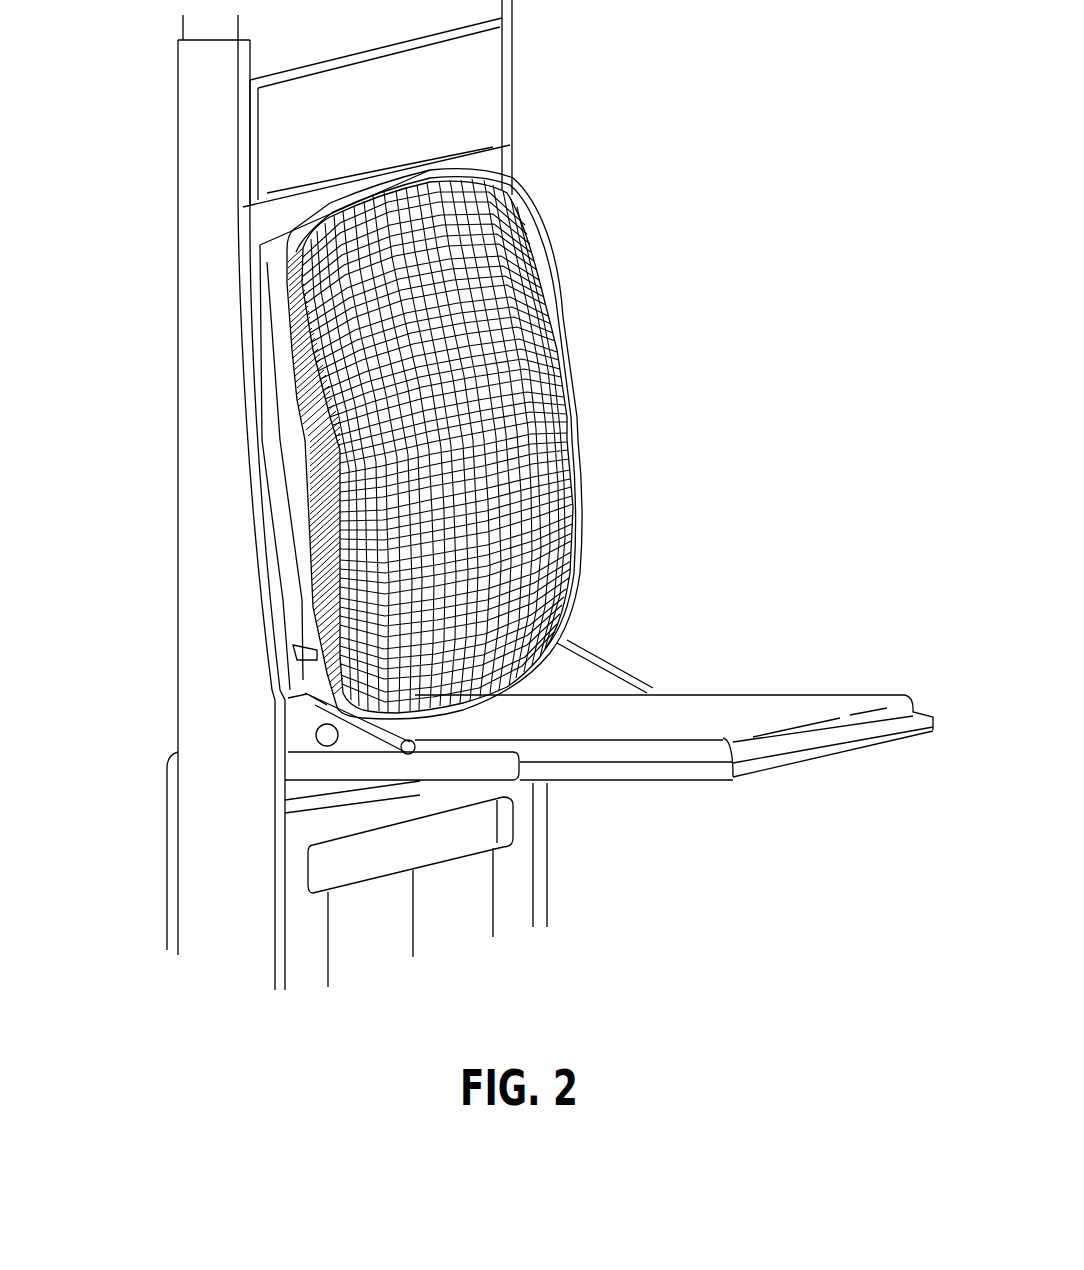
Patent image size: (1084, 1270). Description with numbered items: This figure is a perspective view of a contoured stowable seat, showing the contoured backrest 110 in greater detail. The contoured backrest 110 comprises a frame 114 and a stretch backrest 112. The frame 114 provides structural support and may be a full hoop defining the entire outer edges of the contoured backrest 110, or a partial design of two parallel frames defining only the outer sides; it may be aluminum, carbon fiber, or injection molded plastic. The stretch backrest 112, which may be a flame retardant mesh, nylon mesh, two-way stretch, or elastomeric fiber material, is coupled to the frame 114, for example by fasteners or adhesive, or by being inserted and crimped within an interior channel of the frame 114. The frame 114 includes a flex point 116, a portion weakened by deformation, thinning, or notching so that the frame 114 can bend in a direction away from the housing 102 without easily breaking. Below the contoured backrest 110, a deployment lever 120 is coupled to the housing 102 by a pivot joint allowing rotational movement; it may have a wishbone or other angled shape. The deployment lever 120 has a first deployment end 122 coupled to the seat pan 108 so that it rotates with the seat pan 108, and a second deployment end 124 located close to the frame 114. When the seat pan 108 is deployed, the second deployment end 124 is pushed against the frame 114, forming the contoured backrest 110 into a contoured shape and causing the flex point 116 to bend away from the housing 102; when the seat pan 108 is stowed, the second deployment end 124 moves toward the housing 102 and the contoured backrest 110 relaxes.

The housing 102 is at (207, 592).
The seat pan 108 is at (782, 707).
The contoured backrest 110 is at (419, 434).
The stretch backrest 112 is at (570, 503).
The frame 114 is at (530, 270).
The flex point 116 is at (573, 420).
The deployment lever 120 is at (582, 655).
The first deployment end 122 is at (650, 692).
The second deployment end 124 is at (573, 587).